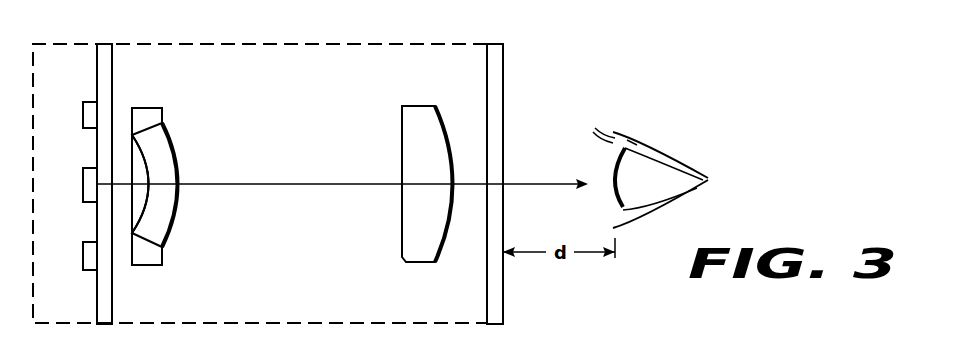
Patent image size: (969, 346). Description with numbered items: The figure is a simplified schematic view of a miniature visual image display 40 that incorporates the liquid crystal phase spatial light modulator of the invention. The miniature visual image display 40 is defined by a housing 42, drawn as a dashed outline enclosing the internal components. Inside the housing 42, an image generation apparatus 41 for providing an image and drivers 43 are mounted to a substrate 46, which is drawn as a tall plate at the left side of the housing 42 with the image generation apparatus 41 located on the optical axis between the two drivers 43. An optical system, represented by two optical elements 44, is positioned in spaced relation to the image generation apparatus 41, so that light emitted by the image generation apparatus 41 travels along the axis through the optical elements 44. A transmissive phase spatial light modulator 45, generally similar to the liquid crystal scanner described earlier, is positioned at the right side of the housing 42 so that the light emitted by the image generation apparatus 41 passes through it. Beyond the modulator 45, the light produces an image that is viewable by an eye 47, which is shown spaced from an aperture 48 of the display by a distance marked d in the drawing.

The miniature visual image display 40 is at (739, 321).
The image generation apparatus 41 is at (83, 171).
The housing 42 is at (311, 43).
The drivers 43 is at (83, 106).
The optical elements 44 is at (175, 163).
The transmissive phase spatial light modulator 45 is at (504, 71).
The substrate 46 is at (113, 84).
The eye 47 is at (652, 175).
The aperture 48 is at (590, 78).